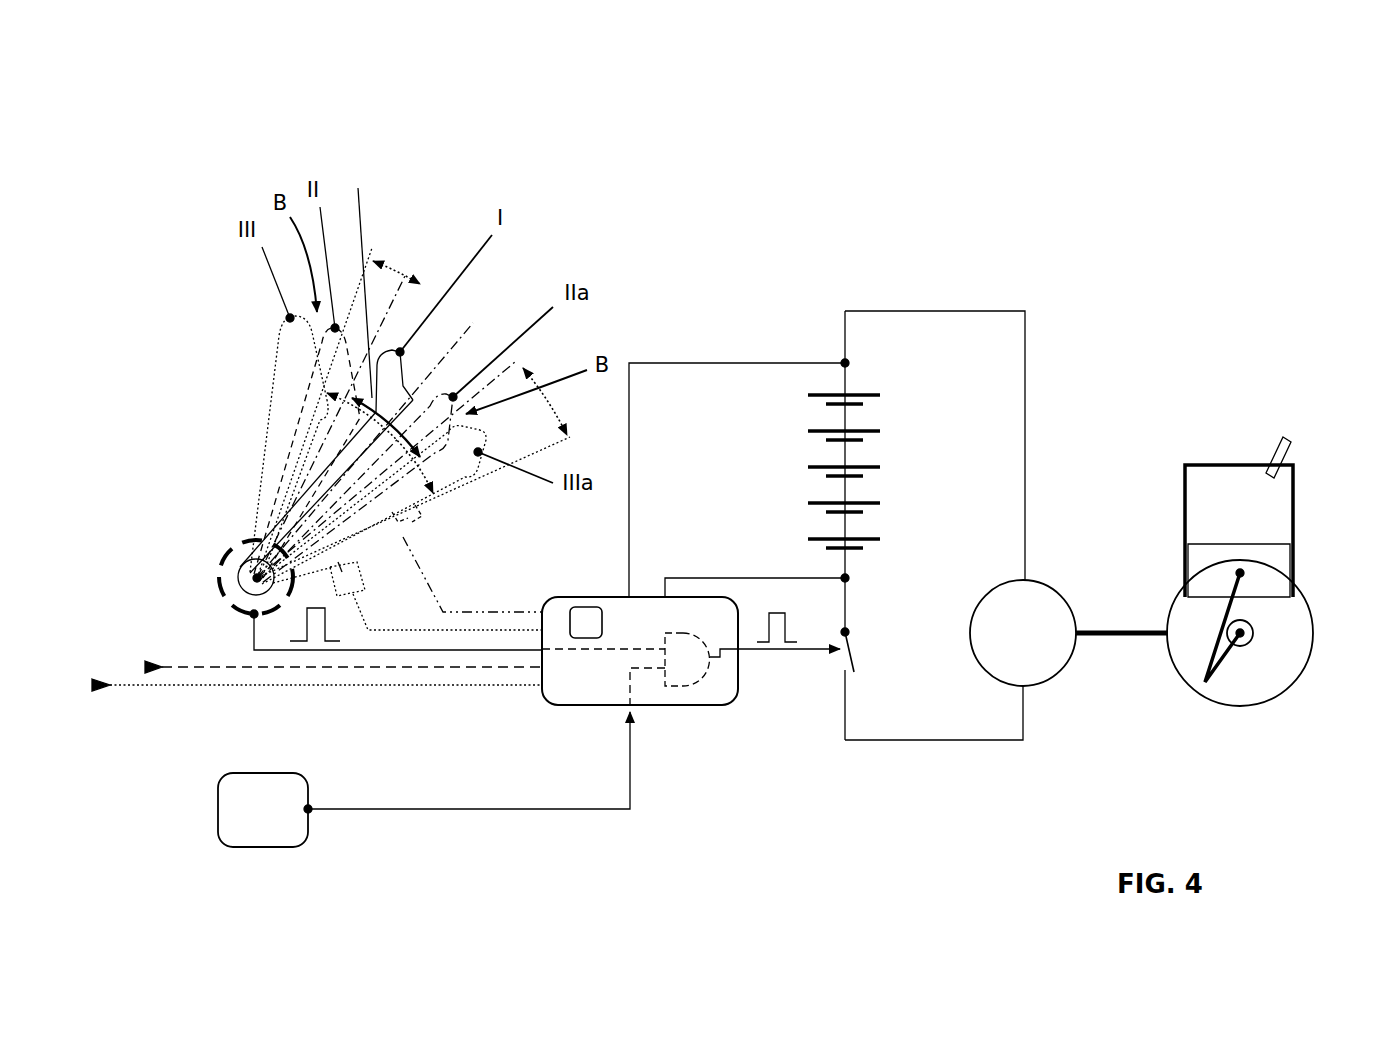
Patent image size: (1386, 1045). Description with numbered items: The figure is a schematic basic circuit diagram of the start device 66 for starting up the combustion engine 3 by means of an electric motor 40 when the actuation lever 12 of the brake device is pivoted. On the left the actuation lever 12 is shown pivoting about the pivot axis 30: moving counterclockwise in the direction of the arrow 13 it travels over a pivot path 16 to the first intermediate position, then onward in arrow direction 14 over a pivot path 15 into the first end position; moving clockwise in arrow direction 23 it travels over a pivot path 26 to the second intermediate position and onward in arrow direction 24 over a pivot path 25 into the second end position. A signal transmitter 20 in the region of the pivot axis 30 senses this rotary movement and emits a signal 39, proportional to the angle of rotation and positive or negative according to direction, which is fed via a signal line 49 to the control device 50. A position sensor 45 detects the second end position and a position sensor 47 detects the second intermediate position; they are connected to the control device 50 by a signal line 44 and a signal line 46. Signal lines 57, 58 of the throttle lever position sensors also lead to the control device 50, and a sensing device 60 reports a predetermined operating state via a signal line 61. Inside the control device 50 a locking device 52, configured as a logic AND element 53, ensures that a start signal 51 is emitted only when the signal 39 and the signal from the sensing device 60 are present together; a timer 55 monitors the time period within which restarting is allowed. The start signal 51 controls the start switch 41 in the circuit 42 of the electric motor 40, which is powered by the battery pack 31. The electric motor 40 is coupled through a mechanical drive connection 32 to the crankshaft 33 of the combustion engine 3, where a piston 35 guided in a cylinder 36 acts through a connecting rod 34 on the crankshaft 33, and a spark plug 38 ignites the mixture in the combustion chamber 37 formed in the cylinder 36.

The combustion engine 3 is at (1248, 591).
The actuation lever 12 is at (400, 352).
The arrow 13 is at (433, 290).
The arrow direction 14 is at (391, 268).
The pivot path 15 is at (328, 413).
The pivot path 16 is at (358, 279).
The signal transmitter 20 is at (220, 563).
The arrow direction 23 is at (515, 362).
The arrow direction 24 is at (548, 415).
The pivot path 25 is at (425, 462).
The pivot path 26 is at (473, 323).
The pivot axis 30 is at (253, 578).
The battery pack 31 is at (833, 455).
The mechanical drive connection 32 is at (1118, 636).
The crankshaft 33 is at (1242, 648).
The connecting rod 34 is at (1207, 640).
The piston 35 is at (1198, 557).
The cylinder 36 is at (1197, 463).
The combustion chamber 37 is at (1203, 508).
The spark plug 38 is at (1278, 452).
The signal 39 is at (317, 638).
The electric motor 40 is at (1045, 668).
The start switch 41 is at (842, 655).
The circuit 42 is at (1025, 323).
The signal line 44 is at (385, 630).
The position sensor 45 is at (360, 580).
The signal line 46 is at (513, 612).
The position sensor 47 is at (400, 520).
The signal line 49 is at (254, 635).
The control device 50 is at (545, 698).
The start signal 51 is at (773, 633).
The locking device 52 is at (680, 692).
The logic AND element 53 is at (692, 681).
The timer 55 is at (573, 610).
The signal line 57 is at (240, 667).
The signal line 58 is at (158, 687).
The sensing device 60 is at (240, 827).
The signal line 61 is at (467, 813).
The start device 66 is at (818, 330).